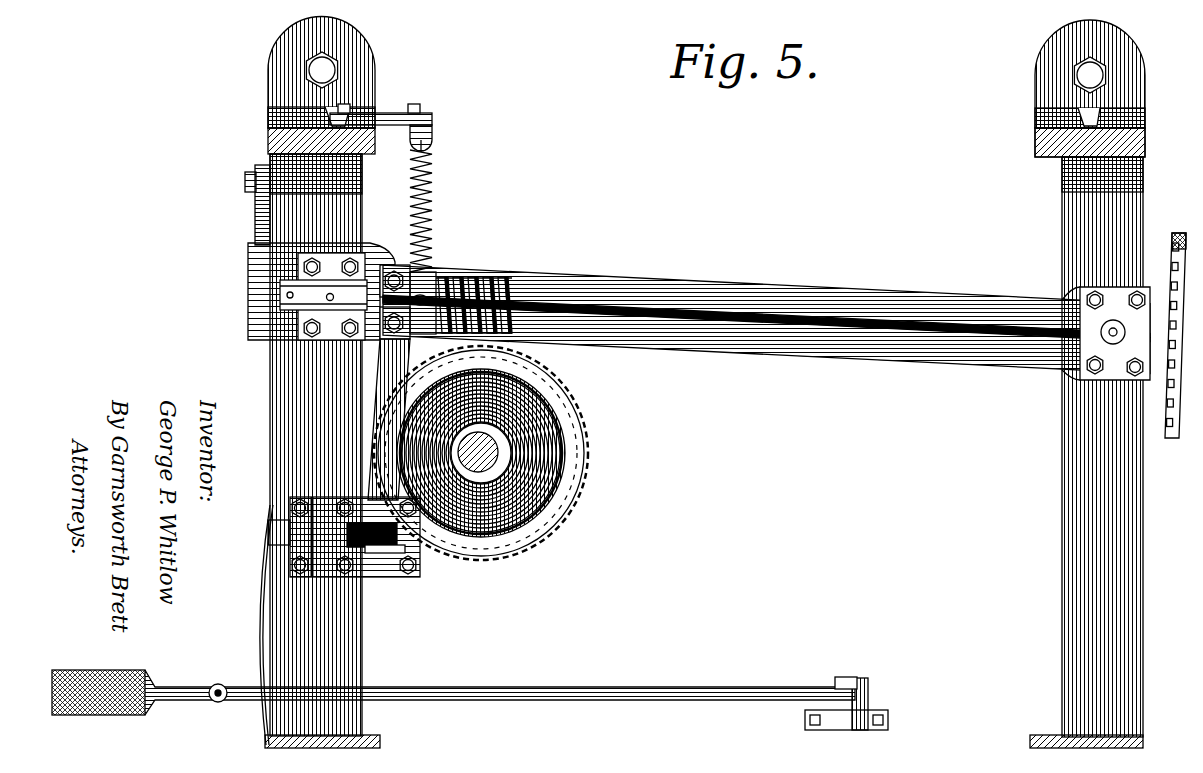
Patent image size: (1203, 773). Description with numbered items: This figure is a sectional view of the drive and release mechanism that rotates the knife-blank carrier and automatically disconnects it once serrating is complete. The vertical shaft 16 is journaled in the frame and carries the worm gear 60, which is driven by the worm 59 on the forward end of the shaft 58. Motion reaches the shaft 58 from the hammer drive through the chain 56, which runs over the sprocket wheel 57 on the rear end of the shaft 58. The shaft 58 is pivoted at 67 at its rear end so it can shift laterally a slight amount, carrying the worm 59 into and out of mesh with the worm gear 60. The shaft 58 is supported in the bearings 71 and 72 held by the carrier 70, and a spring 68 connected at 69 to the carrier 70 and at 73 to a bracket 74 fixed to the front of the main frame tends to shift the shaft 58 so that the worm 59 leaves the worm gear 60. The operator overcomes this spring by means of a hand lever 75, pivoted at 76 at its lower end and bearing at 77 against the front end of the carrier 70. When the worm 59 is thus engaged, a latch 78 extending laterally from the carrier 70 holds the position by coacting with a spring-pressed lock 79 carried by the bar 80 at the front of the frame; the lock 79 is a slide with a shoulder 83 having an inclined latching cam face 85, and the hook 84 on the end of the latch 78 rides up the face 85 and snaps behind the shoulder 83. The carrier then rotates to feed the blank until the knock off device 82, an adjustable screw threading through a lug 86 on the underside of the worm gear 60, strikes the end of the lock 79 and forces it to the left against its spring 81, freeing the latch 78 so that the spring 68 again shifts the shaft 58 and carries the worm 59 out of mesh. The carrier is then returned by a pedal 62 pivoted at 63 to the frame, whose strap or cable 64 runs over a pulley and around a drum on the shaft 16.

The vertical shaft 16 is at (503, 459).
The chain 56 is at (1170, 440).
The sprocket wheel 57 is at (1176, 240).
The shaft 58 is at (760, 300).
The worm 59 is at (490, 278).
The worm gear 60 is at (571, 402).
The pedal 62 is at (125, 670).
The pivot 63 is at (870, 706).
The strap or cable 64 is at (219, 686).
The pivot 67 is at (1062, 366).
The spring 68 is at (432, 208).
The spring connection 69 is at (426, 280).
The carrier 70 is at (578, 283).
The bearing 71 is at (298, 312).
The bearing 72 is at (1090, 315).
The spring connection 73 is at (434, 136).
The bracket 74 is at (385, 113).
The hand lever 75 is at (256, 215).
The pivot 76 is at (247, 180).
The bearing point 77 is at (252, 250).
The latch 78 is at (385, 392).
The lock 79 is at (344, 549).
The bar 80 is at (272, 480).
The spring 81 is at (262, 606).
The knock off device 82 is at (548, 378).
The shoulder 83 is at (417, 566).
The hook 84 is at (382, 555).
The inclined latching cam face 85 is at (360, 522).
The lug 86 is at (481, 453).